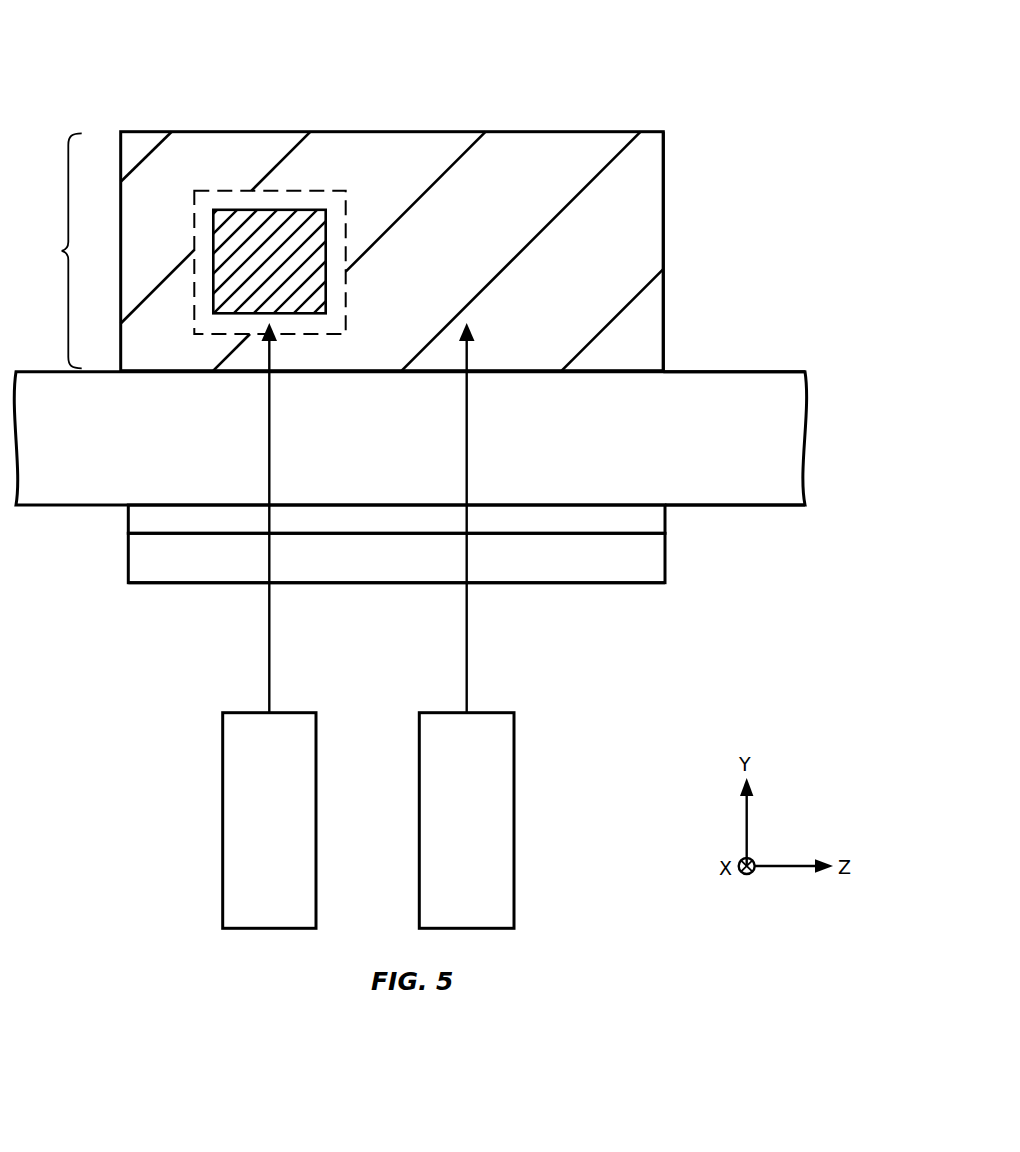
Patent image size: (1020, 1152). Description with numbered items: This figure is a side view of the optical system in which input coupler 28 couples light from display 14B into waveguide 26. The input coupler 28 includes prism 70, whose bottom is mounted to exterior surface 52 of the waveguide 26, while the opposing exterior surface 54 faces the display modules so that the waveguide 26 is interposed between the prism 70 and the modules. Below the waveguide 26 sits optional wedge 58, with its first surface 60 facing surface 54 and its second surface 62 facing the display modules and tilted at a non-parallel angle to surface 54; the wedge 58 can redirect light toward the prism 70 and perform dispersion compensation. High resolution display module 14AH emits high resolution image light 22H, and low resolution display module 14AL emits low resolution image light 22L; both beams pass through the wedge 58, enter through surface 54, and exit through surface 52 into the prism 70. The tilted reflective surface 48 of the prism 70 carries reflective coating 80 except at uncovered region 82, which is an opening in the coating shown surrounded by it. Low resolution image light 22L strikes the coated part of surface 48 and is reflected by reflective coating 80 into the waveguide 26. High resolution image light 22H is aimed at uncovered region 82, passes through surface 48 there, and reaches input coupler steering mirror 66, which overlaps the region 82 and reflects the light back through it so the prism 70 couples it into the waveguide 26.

The display 14B is at (712, 60).
The prism 70 is at (710, 188).
The reflective coating 80 is at (652, 238).
The surface 48 is at (562, 171).
The input coupler steering mirror 66 is at (309, 220).
The uncovered region 82 is at (346, 251).
The input coupler 28 is at (56, 250).
The waveguide 26 is at (792, 445).
The exterior surface 52 is at (770, 370).
The exterior surface 54 is at (777, 507).
The first surface 60 is at (655, 508).
The wedge 58 is at (665, 572).
The second surface 62 is at (633, 587).
The high resolution image light 22H is at (270, 650).
The low resolution image light 22L is at (468, 655).
The high resolution display module 14AH is at (238, 801).
The low resolution display module 14AL is at (497, 812).